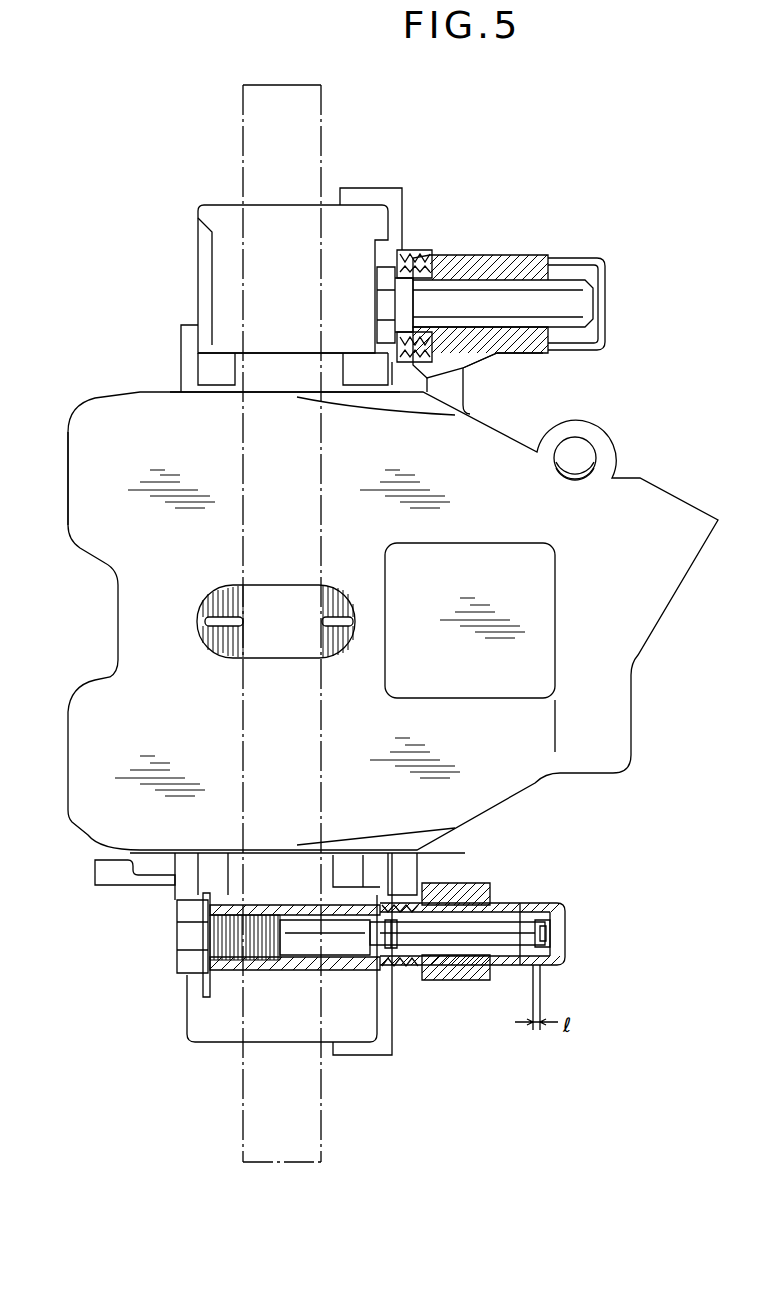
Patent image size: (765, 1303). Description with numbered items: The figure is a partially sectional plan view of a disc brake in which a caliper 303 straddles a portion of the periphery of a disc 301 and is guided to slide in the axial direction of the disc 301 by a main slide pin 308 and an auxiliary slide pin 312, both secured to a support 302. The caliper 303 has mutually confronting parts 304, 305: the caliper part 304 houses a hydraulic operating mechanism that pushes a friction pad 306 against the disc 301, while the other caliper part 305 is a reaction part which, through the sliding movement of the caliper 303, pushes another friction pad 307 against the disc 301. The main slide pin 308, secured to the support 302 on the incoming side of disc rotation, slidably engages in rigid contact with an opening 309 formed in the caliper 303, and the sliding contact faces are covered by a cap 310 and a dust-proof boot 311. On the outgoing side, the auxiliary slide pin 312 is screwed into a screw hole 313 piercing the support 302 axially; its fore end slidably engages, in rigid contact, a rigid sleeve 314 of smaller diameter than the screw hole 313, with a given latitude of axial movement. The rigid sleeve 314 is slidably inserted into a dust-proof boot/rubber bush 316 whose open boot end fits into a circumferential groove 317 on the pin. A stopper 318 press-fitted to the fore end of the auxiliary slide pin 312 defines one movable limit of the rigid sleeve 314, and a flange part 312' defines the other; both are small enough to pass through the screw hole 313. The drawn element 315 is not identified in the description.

The disc 301 is at (305, 120).
The support 302 is at (216, 215).
The caliper 303 is at (130, 389).
The caliper part 304 is at (513, 456).
The caliper part 305 is at (118, 545).
The friction pad 306 is at (386, 582).
The friction pad 307 is at (212, 640).
The main slide pin 308 is at (483, 298).
The opening 309 is at (532, 285).
The cap 310 is at (578, 268).
The dust-proof boot 311 is at (415, 258).
The auxiliary slide pin 312 is at (457, 965).
The flange part 312' is at (432, 966).
The screw hole 313 is at (205, 950).
The rigid sleeve 314 is at (520, 907).
The sleeve 315 is at (480, 885).
The dust-proof boot/rubber bush 316 is at (565, 905).
The circumferential groove 317 is at (398, 966).
The stopper 318 is at (548, 935).